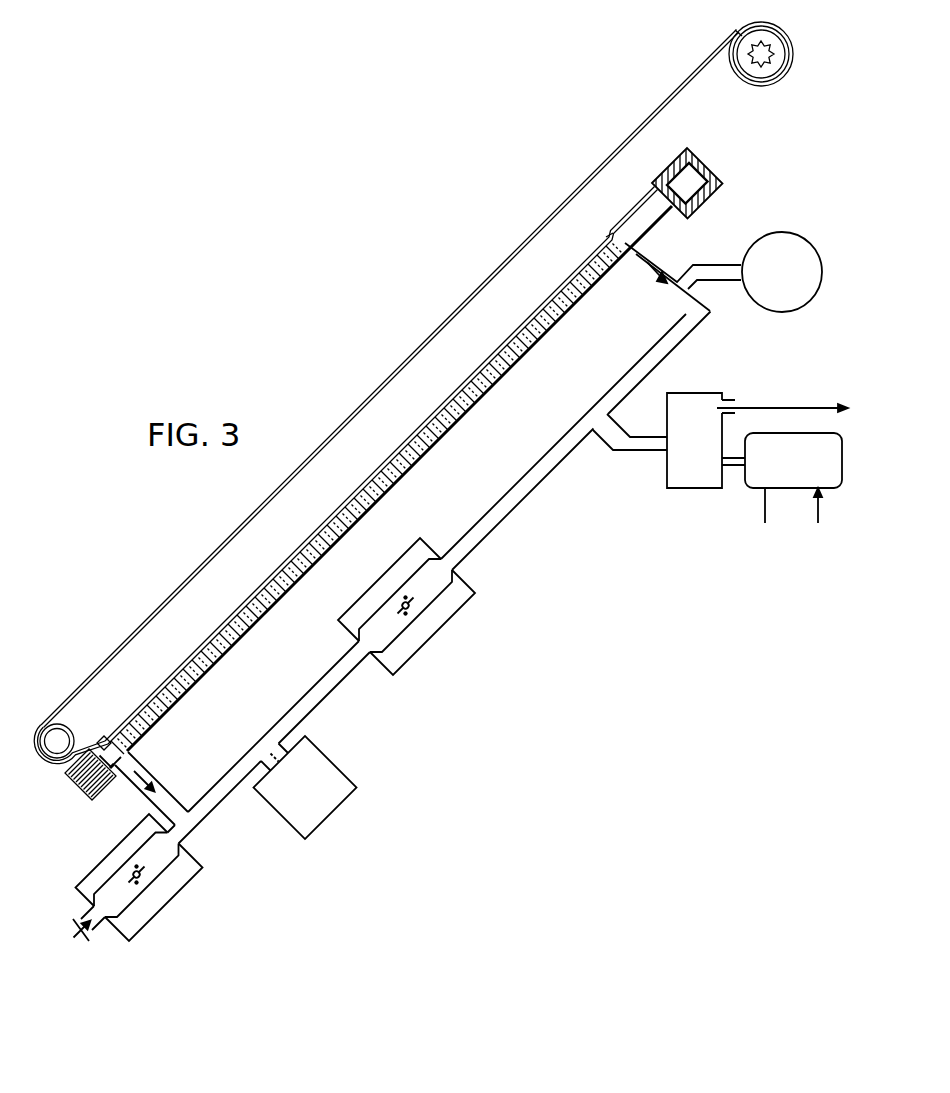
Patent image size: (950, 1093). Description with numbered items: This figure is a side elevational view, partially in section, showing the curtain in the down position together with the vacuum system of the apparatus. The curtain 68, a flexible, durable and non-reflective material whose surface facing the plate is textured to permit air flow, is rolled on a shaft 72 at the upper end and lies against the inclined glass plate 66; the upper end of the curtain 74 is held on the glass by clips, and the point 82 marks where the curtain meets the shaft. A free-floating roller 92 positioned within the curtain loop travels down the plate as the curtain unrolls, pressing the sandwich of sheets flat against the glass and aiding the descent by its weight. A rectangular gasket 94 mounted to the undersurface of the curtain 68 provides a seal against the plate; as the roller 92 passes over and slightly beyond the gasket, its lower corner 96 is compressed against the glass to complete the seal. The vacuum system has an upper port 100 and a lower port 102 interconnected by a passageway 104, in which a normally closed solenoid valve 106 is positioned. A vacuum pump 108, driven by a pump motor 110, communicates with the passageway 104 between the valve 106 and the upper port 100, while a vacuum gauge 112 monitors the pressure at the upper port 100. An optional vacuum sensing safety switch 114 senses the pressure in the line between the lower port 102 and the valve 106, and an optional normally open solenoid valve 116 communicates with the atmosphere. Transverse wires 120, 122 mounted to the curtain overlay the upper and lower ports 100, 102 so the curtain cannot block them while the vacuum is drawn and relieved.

The glass plate 66 is at (548, 333).
The curtain 68 is at (414, 345).
The shaft 72 is at (768, 44).
The upper end of the curtain 74 is at (684, 218).
The belt contact on pulley 82 is at (738, 34).
The roller 92 is at (72, 713).
The gasket 94 is at (77, 770).
The corner of the gasket 96 is at (110, 768).
The upper port 100 is at (632, 257).
The lower port 102 is at (128, 757).
The passageway 104 is at (482, 521).
The solenoid valve 106 is at (426, 643).
The vacuum pump 108 is at (694, 488).
The pump motor 110 is at (843, 458).
The vacuum gauge 112 is at (795, 231).
The vacuum sensing safety switch 114 is at (331, 813).
The solenoid valve 116 is at (178, 893).
The transverse wire 120 is at (606, 236).
The transverse wire 122 is at (105, 738).